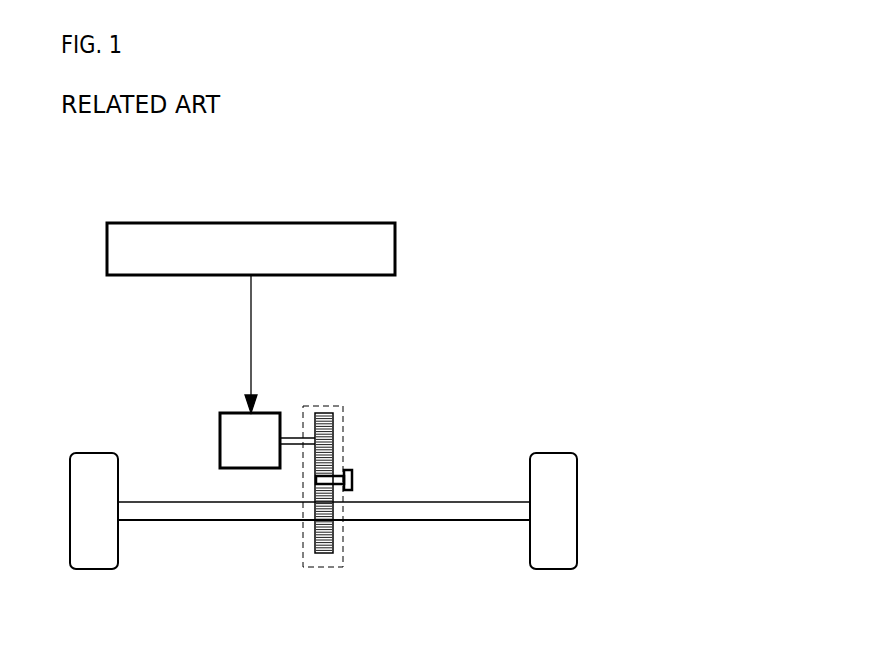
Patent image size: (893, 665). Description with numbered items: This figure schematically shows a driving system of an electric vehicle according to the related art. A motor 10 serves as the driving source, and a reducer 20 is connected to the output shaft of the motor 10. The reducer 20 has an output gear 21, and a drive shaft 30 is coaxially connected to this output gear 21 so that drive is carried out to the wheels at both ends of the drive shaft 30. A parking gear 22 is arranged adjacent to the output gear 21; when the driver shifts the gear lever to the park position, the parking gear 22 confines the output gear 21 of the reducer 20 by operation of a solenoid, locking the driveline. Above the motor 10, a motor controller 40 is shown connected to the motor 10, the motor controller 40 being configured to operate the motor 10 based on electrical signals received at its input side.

The motor 10 is at (227, 413).
The reducer 20 is at (322, 406).
The output gear 21 is at (323, 553).
The parking gear 22 is at (335, 476).
The drive shaft 30 is at (428, 512).
The motor controller 40 is at (251, 223).